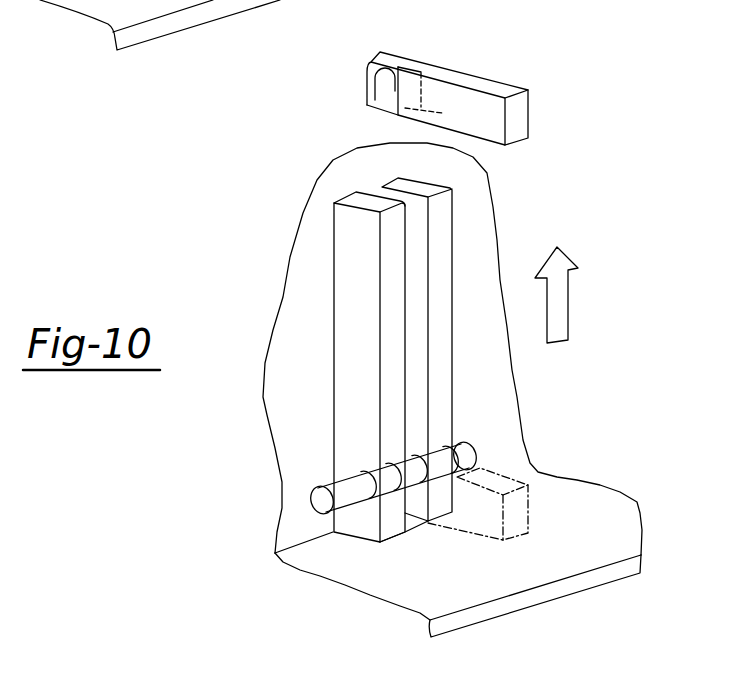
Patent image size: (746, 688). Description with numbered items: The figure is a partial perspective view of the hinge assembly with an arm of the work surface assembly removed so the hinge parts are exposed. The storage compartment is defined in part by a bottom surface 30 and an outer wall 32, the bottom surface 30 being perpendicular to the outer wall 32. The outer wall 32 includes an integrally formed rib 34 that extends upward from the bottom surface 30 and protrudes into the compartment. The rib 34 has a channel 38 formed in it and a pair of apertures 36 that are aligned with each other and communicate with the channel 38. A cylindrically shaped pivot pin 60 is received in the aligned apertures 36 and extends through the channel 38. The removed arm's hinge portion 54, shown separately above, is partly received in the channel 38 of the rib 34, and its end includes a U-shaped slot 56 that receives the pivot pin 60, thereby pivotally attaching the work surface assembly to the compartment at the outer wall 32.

The bottom surface 30 is at (600, 520).
The outer wall 32 is at (483, 202).
The rib 34 is at (350, 257).
The aperture 36 is at (350, 480).
The channel 38 is at (382, 190).
The hinge portion 54 is at (503, 90).
The U-shaped slot 56 is at (388, 96).
The pivot pin 60 is at (318, 503).